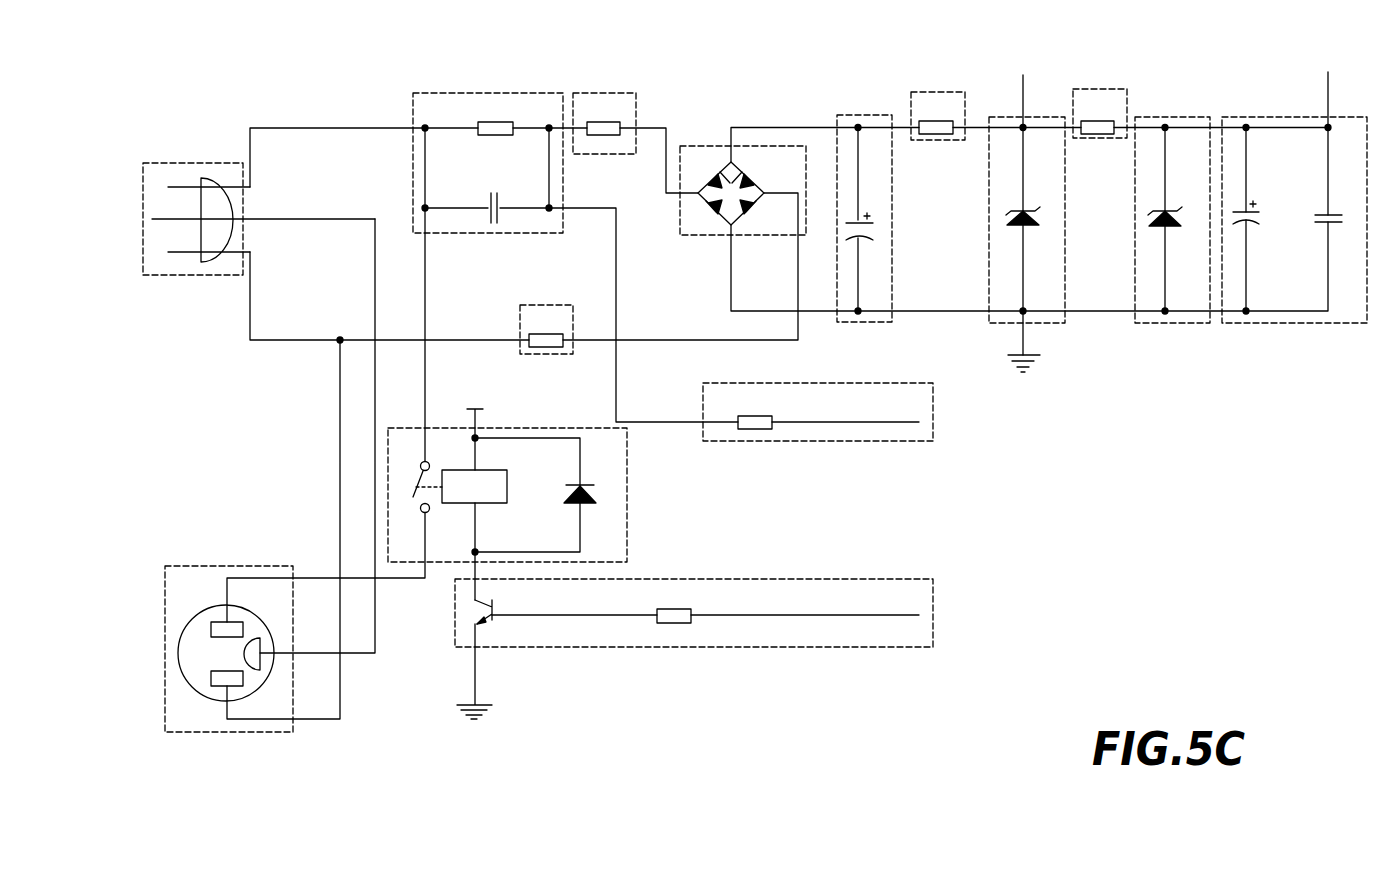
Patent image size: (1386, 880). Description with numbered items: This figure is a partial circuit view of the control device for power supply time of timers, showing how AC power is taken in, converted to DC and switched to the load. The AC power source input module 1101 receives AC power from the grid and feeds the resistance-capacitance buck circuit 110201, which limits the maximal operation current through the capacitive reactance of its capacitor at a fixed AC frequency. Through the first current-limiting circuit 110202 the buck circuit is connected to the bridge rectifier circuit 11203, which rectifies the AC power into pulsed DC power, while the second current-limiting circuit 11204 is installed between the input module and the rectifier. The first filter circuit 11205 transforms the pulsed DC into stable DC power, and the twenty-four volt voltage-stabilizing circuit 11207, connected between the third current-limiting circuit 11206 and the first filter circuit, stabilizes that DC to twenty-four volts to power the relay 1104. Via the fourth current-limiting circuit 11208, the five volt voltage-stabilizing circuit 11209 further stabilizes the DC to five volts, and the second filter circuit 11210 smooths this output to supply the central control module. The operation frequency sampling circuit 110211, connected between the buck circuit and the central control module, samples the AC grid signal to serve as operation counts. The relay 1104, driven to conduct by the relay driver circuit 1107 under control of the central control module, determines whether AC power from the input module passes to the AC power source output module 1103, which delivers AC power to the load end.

The AC power source input module 1101 is at (193, 162).
The AC power source output module 1103 is at (250, 566).
The relay 1104 is at (627, 527).
The relay driver circuit 1107 is at (777, 647).
The resistance-capacitance buck circuit 110201 is at (463, 93).
The first current-limiting circuit 110202 is at (597, 93).
The operation frequency sampling circuit 110211 is at (793, 441).
The bridge rectifier circuit 11203 is at (702, 146).
The second current-limiting circuit 11204 is at (557, 305).
The first filter circuit 11205 is at (858, 323).
The third current-limiting circuit 11206 is at (940, 92).
The 24V voltage-stabilizing circuit 11207 is at (1043, 323).
The fourth current-limiting circuit 11208 is at (1098, 90).
The 5V voltage-stabilizing circuit 11209 is at (1167, 117).
The second filter circuit 11210 is at (1273, 323).